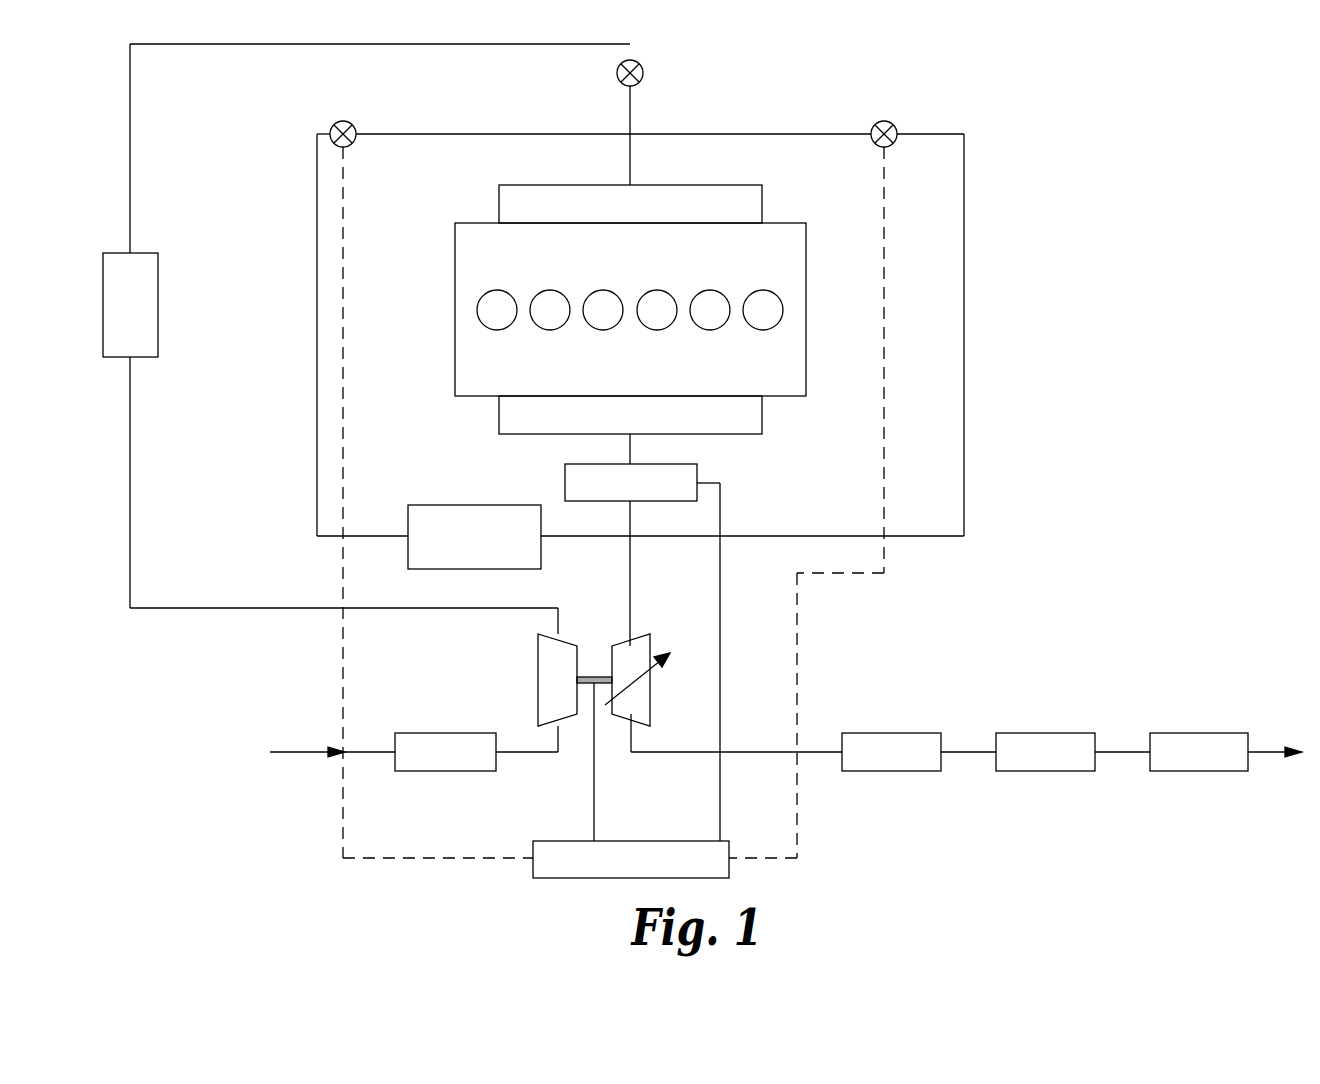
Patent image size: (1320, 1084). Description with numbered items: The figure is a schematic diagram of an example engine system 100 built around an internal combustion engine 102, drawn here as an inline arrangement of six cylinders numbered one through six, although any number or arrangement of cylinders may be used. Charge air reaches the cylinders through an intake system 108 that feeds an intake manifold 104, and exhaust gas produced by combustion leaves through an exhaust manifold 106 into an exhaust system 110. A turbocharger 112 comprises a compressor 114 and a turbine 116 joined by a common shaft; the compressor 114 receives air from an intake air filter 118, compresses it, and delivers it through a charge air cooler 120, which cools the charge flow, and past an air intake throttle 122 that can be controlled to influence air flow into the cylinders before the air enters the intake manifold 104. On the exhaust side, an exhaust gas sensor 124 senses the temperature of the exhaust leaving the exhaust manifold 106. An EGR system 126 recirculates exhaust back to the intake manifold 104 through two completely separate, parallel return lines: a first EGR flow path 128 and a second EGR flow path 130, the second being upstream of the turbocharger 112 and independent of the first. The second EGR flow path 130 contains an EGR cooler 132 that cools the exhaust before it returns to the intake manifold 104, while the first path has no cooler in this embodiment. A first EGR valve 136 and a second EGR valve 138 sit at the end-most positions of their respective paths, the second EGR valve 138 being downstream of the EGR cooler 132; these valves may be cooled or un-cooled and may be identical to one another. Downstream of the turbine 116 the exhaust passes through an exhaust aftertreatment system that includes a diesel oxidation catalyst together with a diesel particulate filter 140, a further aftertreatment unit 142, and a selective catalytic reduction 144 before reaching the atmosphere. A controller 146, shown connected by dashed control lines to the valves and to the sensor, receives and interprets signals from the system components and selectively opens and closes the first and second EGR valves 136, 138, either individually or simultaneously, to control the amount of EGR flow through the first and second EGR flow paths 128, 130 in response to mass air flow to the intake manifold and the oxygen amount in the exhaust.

The engine system 100 is at (1105, 99).
The engine 102 is at (806, 317).
The intake manifold 104 is at (723, 185).
The exhaust manifold 106 is at (763, 413).
The intake system 108 is at (298, 673).
The exhaust system 110 is at (896, 605).
The turbocharger 112 is at (591, 660).
The compressor 114 is at (538, 662).
The turbine 116 is at (650, 703).
The intake air filter 118 is at (433, 771).
The charge air cooler 120 is at (158, 313).
The air intake throttle 122 is at (643, 70).
The exhaust gas sensor 124 is at (565, 487).
The EGR system 126 is at (661, 556).
The first EGR flow path 128 is at (964, 283).
The second EGR flow path 130 is at (317, 215).
The EGR cooler 132 is at (413, 505).
The first EGR valve 136 is at (884, 121).
The second EGR valve 138 is at (352, 124).
The diesel particulate filter 140 is at (887, 771).
The diesel particulate filter 142 is at (1067, 771).
The selective catalytic reduction 144 is at (1227, 771).
The controller 146 is at (562, 878).